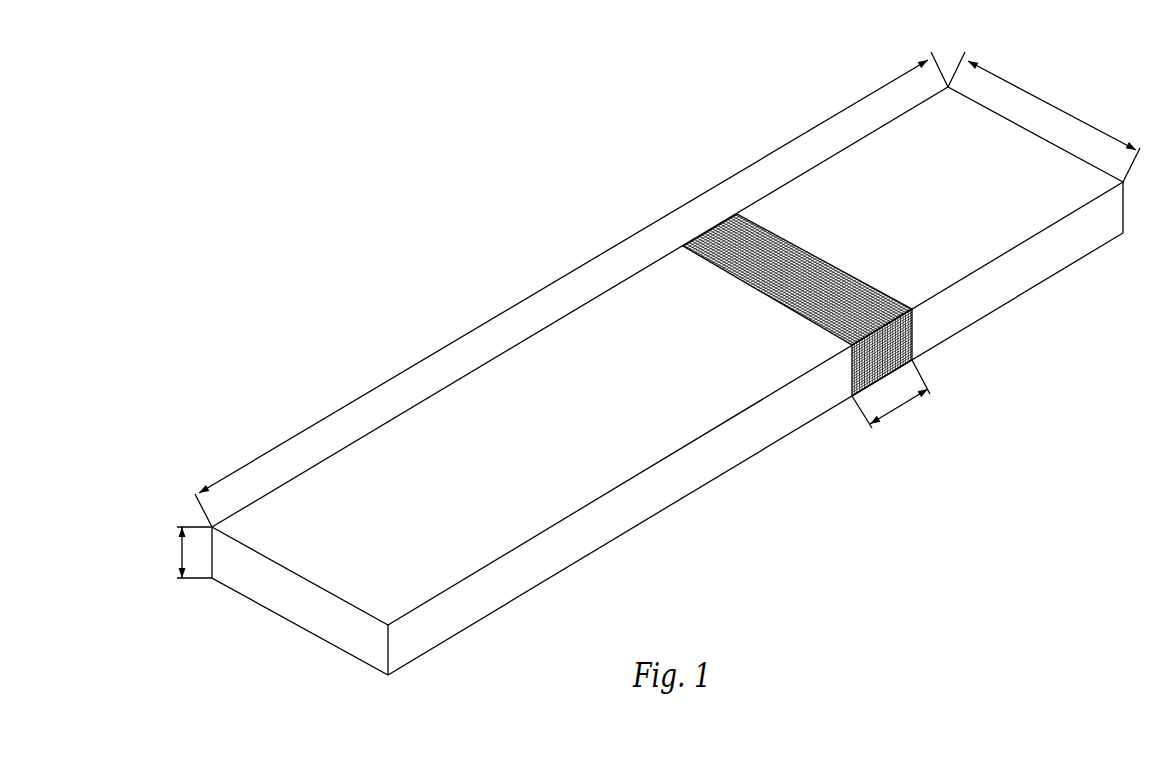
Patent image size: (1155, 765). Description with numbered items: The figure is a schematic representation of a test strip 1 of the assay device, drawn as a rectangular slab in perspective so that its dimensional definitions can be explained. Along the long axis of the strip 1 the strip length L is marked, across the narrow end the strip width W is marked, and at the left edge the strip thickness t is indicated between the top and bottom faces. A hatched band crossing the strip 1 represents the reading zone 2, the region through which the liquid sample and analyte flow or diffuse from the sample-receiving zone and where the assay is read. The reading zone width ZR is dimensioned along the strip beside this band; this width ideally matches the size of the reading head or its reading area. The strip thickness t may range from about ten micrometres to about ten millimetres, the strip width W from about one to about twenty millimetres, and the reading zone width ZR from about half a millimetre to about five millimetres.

The strip 1 is at (467, 475).
The reading zone 2 is at (767, 260).
The strip length L is at (571, 289).
The strip width W is at (1044, 117).
The strip thickness t is at (183, 552).
The reading zone width ZR is at (891, 394).